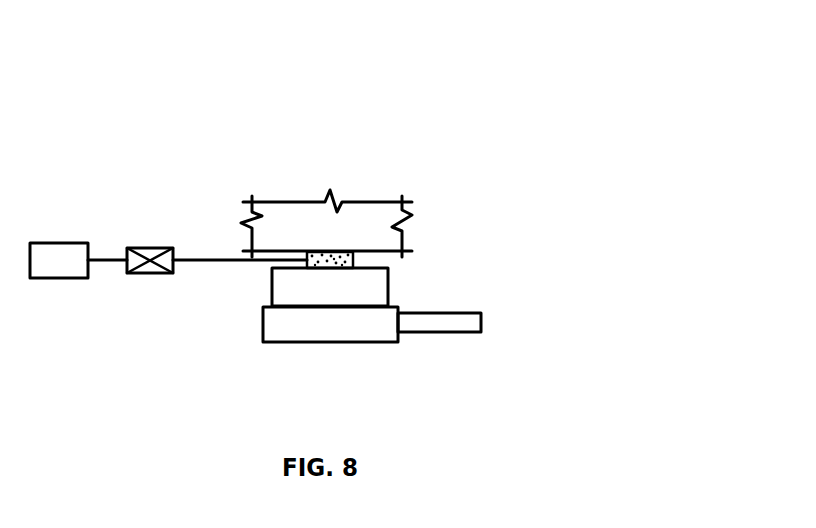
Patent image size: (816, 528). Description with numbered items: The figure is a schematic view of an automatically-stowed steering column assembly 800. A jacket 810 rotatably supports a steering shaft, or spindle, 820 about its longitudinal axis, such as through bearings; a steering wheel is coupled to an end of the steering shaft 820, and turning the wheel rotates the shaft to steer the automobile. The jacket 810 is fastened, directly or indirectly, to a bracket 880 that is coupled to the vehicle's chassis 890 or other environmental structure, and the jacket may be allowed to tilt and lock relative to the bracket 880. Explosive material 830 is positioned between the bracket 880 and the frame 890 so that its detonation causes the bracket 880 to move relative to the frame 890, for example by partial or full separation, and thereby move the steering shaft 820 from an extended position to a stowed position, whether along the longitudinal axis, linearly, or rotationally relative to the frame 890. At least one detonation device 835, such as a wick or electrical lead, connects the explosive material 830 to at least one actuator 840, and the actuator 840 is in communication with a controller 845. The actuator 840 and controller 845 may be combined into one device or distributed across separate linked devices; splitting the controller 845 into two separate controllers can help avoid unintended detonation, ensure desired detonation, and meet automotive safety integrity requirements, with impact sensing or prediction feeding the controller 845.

The automatically-stowed steering column assembly 800 is at (368, 88).
The jacket 810 is at (285, 330).
The steering shaft 820 is at (458, 322).
The explosive material 830 is at (356, 260).
The detonation device 835 is at (203, 257).
The actuator 840 is at (150, 273).
The controller 845 is at (60, 255).
The bracket 880 is at (265, 288).
The chassis 890 is at (363, 220).